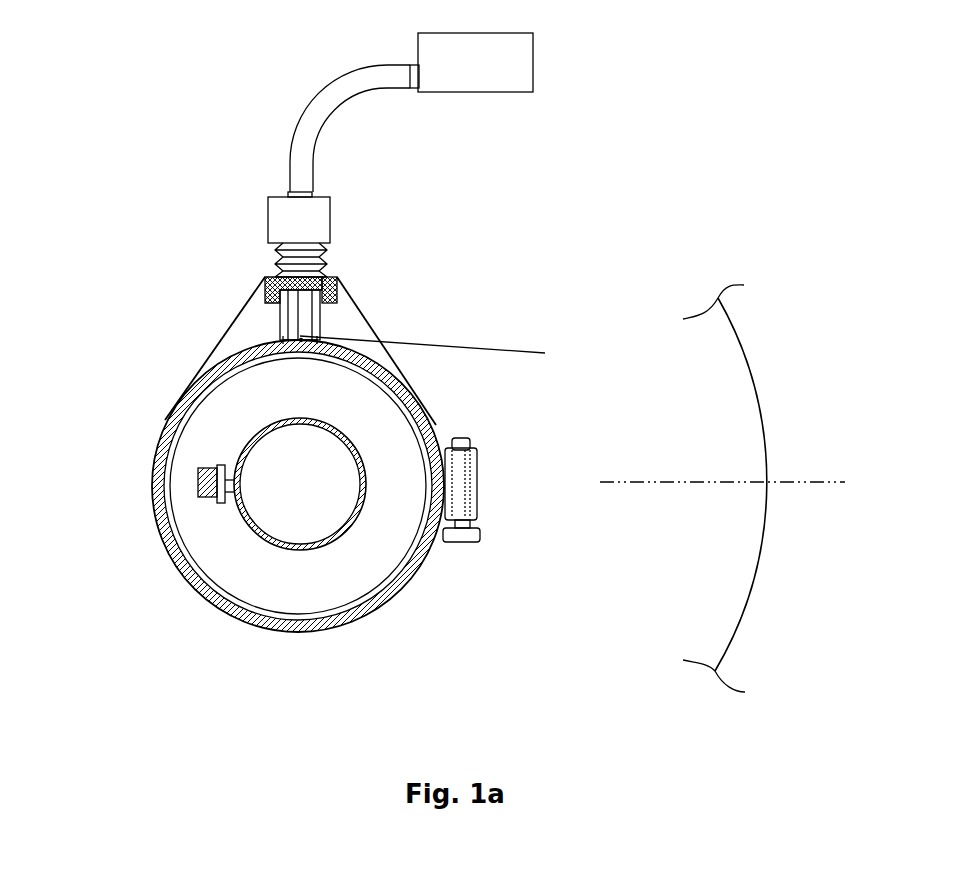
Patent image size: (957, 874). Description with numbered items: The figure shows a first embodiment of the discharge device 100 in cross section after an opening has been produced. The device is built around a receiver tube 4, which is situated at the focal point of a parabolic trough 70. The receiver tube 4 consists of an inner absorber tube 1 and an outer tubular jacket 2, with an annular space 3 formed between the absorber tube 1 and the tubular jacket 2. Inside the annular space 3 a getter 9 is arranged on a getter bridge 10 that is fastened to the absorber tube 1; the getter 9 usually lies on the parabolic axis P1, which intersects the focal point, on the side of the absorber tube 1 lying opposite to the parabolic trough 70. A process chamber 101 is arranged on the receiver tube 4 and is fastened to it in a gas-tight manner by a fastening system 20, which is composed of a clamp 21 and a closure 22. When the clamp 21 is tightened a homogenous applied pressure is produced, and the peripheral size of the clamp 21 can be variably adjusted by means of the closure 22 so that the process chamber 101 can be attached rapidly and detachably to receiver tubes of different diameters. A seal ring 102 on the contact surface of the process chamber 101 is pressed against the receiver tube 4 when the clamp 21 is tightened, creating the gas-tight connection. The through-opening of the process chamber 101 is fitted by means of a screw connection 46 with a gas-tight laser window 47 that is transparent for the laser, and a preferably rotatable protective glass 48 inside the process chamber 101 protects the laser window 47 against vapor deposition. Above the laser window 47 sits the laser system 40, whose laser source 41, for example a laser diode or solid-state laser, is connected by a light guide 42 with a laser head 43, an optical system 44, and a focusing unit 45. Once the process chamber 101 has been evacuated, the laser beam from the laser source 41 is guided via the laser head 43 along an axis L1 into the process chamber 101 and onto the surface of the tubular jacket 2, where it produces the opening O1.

The discharge device 100 is at (118, 65).
The absorber tube 1 is at (247, 437).
The tubular jacket 2 is at (192, 395).
The annular space 3 is at (203, 517).
The receiver tube 4 is at (185, 578).
The getter 9 is at (200, 482).
The getter bridge 10 is at (217, 467).
The fastening system 20 is at (480, 487).
The clamp 21 is at (423, 560).
The closure 22 is at (460, 458).
The laser system 40 is at (536, 60).
The laser source 41 is at (477, 75).
The light guide 42 is at (377, 78).
The laser head 43 is at (275, 195).
The optical system 44 is at (285, 217).
The focusing unit 45 is at (278, 258).
The screw connection 46 is at (331, 277).
The laser window 47 is at (270, 287).
The protective glass 48 is at (293, 323).
The process chamber 101 is at (280, 313).
The seal ring 102 is at (300, 336).
The axis L1 is at (437, 351).
The opening O1 is at (303, 340).
The parabolic trough 70 is at (748, 360).
The parabolic axis P1 is at (789, 482).